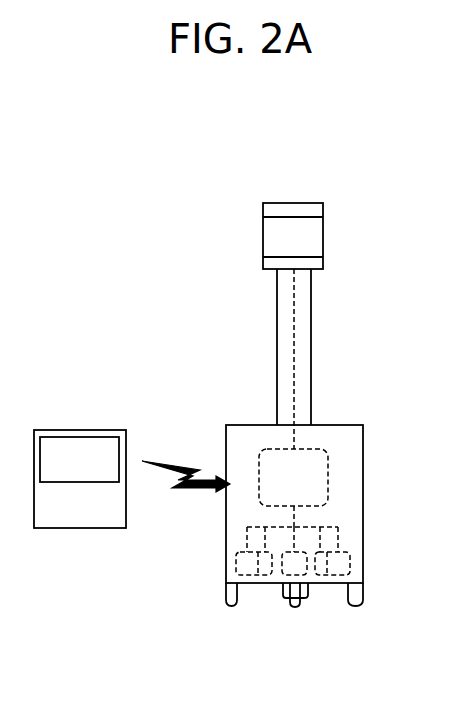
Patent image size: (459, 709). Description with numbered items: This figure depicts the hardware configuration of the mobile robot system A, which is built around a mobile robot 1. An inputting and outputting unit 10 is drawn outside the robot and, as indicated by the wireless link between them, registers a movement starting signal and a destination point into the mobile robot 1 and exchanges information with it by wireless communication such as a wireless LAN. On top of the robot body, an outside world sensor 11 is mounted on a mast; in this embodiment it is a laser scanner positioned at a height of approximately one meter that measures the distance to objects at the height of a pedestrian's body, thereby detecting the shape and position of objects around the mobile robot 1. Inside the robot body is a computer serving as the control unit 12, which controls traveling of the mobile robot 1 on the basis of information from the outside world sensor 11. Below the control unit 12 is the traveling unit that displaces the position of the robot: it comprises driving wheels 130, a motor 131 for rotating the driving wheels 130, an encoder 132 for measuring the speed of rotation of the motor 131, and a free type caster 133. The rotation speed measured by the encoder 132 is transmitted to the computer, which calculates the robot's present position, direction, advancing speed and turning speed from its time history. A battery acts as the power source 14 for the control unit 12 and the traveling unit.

The mobile robot system A is at (100, 242).
The mobile robot 1 is at (212, 355).
The inputting and outputting unit 10 is at (60, 430).
The outside world sensor 11 is at (296, 201).
The control unit 12 is at (329, 470).
The power source 14 is at (306, 575).
The driving wheels 130 is at (232, 606).
The motor 131 is at (237, 562).
The encoder 132 is at (247, 577).
The free type caster 133 is at (295, 608).